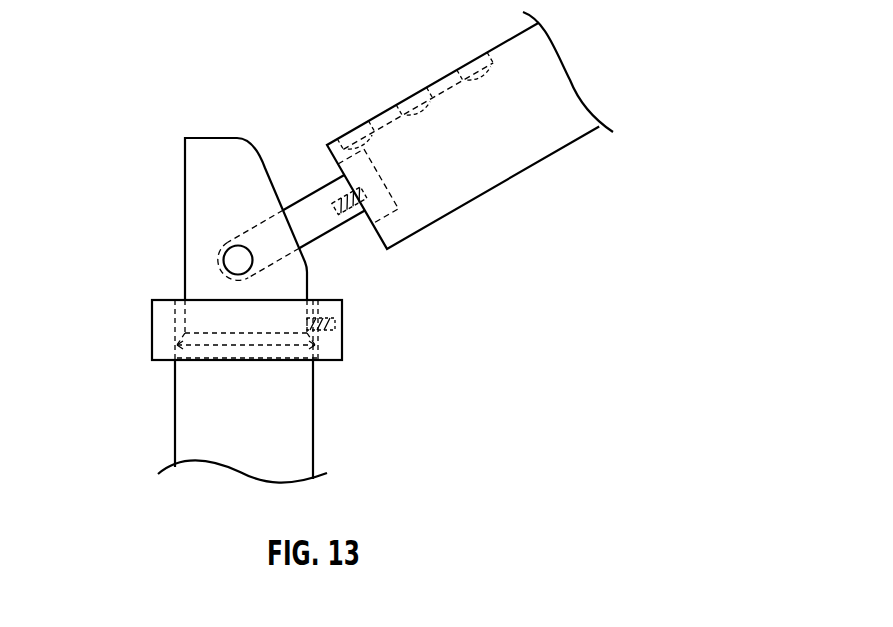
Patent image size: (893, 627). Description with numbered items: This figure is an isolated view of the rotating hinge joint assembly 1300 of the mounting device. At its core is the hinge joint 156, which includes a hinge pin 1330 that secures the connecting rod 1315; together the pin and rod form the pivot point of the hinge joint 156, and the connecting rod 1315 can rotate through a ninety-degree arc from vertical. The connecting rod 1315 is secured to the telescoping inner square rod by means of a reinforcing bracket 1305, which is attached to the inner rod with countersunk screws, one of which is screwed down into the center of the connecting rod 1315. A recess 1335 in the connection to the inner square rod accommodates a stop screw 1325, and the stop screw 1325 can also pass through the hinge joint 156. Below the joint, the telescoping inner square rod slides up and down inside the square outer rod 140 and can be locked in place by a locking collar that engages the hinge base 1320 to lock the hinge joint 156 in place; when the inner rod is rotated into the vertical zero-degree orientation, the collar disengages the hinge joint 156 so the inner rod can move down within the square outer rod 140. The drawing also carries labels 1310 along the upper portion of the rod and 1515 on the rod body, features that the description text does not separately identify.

The rotating hinge joint assembly 1300 is at (194, 77).
The hinge joint 156 is at (185, 192).
The hinge pin 1330 is at (236, 260).
The connecting rod 1315 is at (312, 196).
The recess 1335 is at (395, 228).
The reinforcing bracket 1305 is at (420, 112).
The slots 1310 is at (353, 131).
The tube 1515 is at (547, 160).
The hinge base 1320 is at (172, 322).
The stop screw 1325 is at (342, 317).
The square outer rod 140 is at (269, 423).